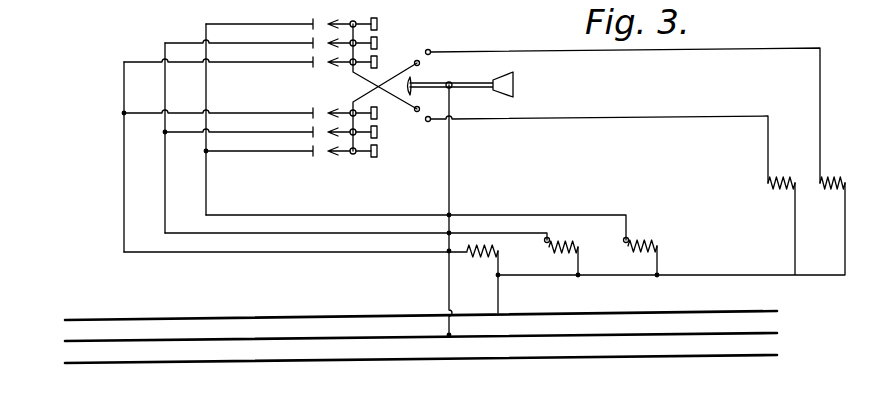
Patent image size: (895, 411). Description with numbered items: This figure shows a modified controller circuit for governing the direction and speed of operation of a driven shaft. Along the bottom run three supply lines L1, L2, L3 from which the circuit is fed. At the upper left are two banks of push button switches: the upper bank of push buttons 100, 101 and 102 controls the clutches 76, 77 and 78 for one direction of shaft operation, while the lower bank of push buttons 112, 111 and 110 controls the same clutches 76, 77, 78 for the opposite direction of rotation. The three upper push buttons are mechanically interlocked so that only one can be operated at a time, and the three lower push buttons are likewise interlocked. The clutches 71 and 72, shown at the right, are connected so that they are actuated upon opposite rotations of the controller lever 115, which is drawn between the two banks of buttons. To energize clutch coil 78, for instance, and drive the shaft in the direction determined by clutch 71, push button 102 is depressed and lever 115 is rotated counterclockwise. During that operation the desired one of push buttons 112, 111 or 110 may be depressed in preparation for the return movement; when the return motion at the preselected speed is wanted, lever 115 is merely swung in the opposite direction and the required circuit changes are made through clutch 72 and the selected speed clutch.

The push button switch 100 is at (378, 22).
The push button switch 101 is at (378, 42).
The push button switch 102 is at (378, 62).
The push button 110 is at (378, 153).
The push button 111 is at (378, 134).
The push button 112 is at (378, 116).
The controller lever 115 is at (473, 83).
The clutch 71 is at (778, 180).
The clutch 72 is at (830, 181).
The clutch 76 is at (657, 244).
The clutch 77 is at (560, 245).
The clutch coil 78 is at (478, 248).
The supply line L1 is at (127, 319).
The supply line L2 is at (174, 361).
The supply line L3 is at (229, 340).